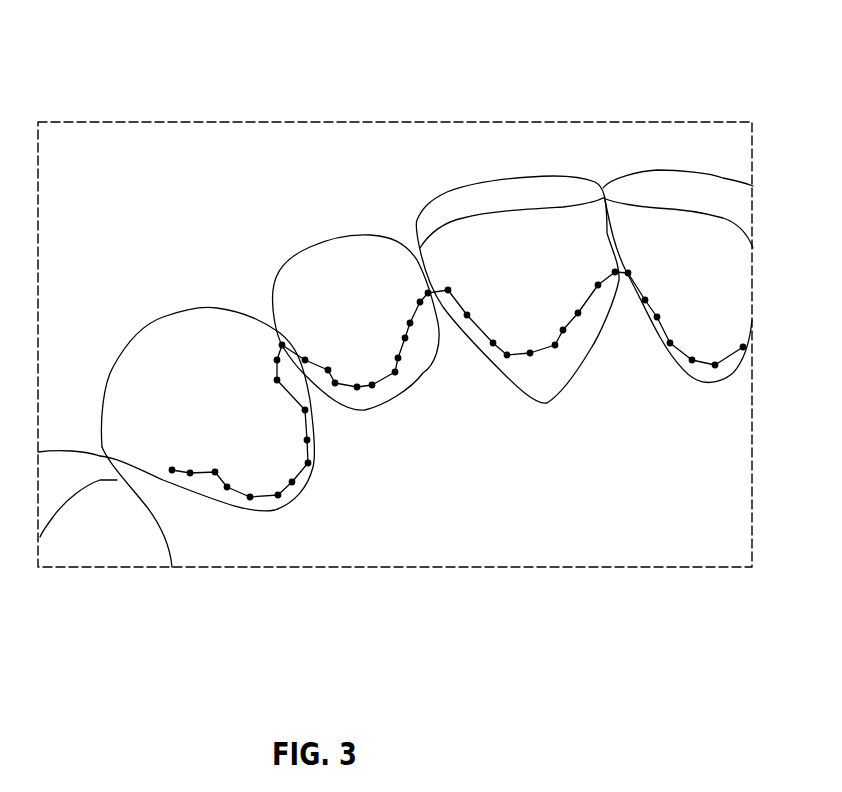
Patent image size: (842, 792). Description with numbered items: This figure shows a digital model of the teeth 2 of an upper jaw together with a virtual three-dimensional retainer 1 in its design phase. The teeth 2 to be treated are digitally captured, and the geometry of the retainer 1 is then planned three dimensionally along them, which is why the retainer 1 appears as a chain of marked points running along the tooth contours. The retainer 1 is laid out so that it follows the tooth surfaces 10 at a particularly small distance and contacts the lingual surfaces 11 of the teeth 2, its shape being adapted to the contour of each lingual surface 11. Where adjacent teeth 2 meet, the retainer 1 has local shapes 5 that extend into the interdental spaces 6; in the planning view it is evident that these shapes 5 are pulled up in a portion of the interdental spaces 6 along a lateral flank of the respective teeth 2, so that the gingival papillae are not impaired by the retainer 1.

The retainer 1 is at (482, 325).
The teeth 2 is at (168, 358).
The shapes 5 is at (278, 347).
The interdental spaces 6 is at (280, 343).
The tooth surfaces 10 is at (690, 240).
The lingual surfaces 11 is at (680, 319).